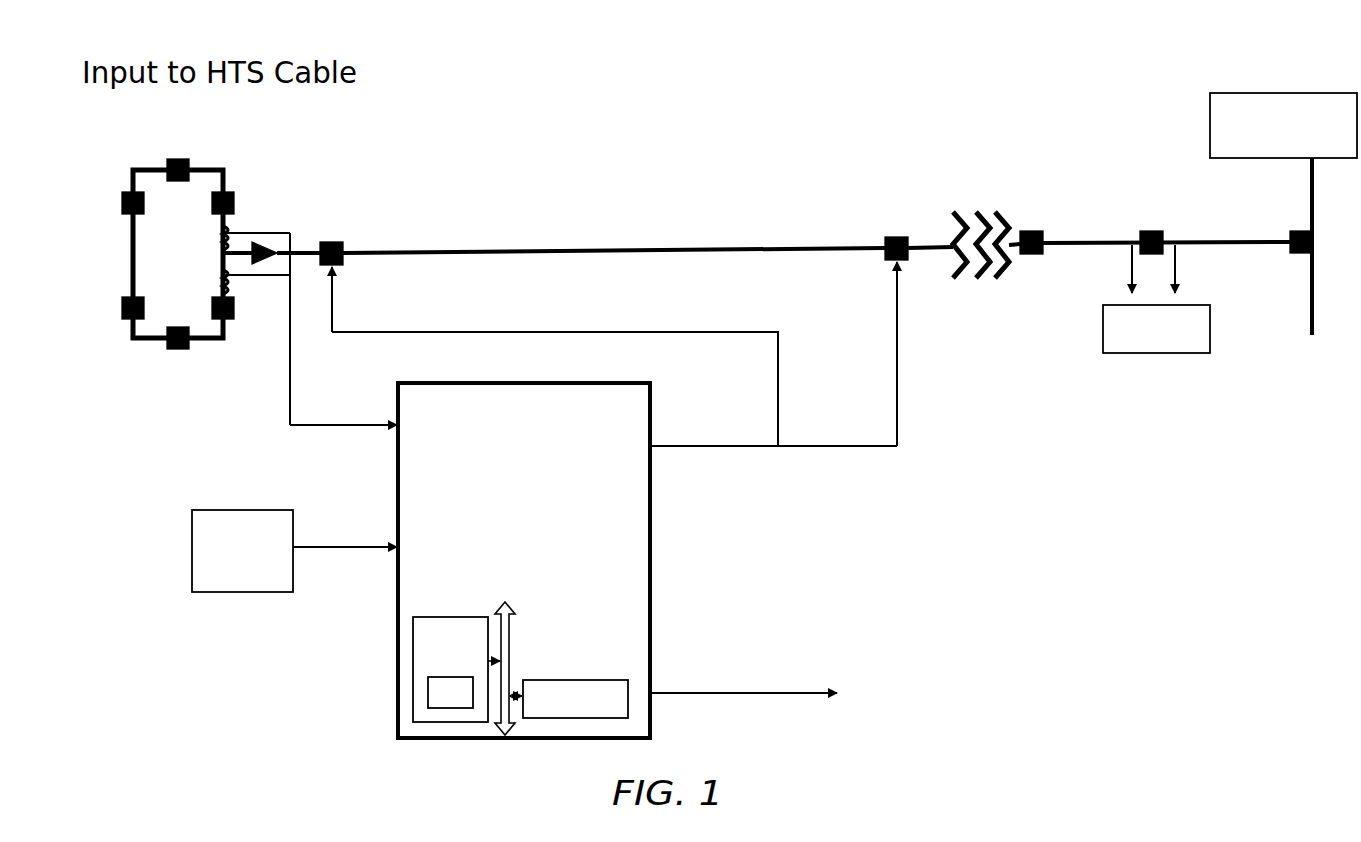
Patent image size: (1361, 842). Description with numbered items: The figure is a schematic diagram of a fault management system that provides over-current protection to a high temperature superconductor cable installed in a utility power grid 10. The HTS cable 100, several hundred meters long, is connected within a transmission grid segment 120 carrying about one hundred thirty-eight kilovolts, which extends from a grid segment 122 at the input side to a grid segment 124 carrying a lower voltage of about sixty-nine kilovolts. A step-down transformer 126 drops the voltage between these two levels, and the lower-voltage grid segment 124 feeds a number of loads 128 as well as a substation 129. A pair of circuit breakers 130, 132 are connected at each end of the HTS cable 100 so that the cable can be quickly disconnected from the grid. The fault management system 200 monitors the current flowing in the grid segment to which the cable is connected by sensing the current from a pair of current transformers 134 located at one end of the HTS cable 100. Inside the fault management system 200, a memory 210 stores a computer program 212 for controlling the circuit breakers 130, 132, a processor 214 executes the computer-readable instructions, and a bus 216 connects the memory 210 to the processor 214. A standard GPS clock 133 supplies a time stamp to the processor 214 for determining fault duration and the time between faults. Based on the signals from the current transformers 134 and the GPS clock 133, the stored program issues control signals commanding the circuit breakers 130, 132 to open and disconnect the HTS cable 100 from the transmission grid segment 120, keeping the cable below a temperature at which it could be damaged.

The utility power grid 10 is at (554, 218).
The HTS cable 100 is at (733, 246).
The transmission grid segment 120 is at (924, 238).
The grid segment 122 is at (212, 158).
The grid segment 124 is at (1212, 234).
The step-down transformer 126 is at (985, 198).
The loads 128 is at (1203, 340).
The substation 129 is at (1294, 98).
The circuit breaker 130 is at (337, 242).
The circuit breaker 132 is at (899, 236).
The GPS clock 133 is at (178, 580).
The current transformers 134 is at (231, 234).
The fault management system 200 is at (650, 557).
The memory 210 is at (412, 642).
The computer program 212 is at (450, 692).
The processor 214 is at (598, 683).
The bus 216 is at (514, 625).